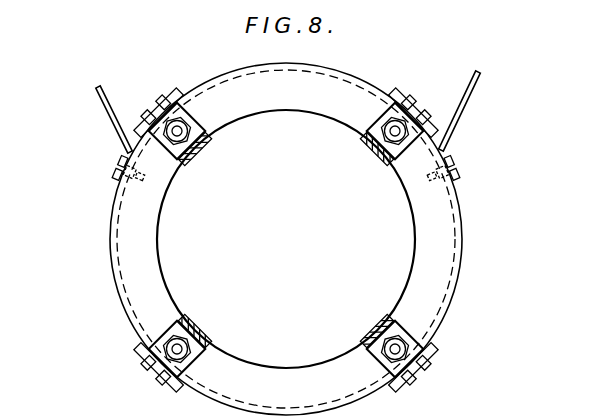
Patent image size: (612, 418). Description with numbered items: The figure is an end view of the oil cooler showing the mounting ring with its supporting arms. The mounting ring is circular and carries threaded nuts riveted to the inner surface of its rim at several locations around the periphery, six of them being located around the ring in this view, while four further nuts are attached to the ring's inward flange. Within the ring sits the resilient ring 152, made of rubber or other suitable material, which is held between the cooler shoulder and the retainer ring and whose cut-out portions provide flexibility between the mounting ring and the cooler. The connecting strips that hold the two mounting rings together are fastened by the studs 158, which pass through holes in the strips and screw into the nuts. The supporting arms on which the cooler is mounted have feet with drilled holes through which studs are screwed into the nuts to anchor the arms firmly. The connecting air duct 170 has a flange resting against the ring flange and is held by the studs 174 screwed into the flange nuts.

The resilient ring 152 is at (356, 75).
The studs 158 is at (160, 112).
The connecting air duct 170 is at (189, 152).
The studs 174 is at (190, 118).